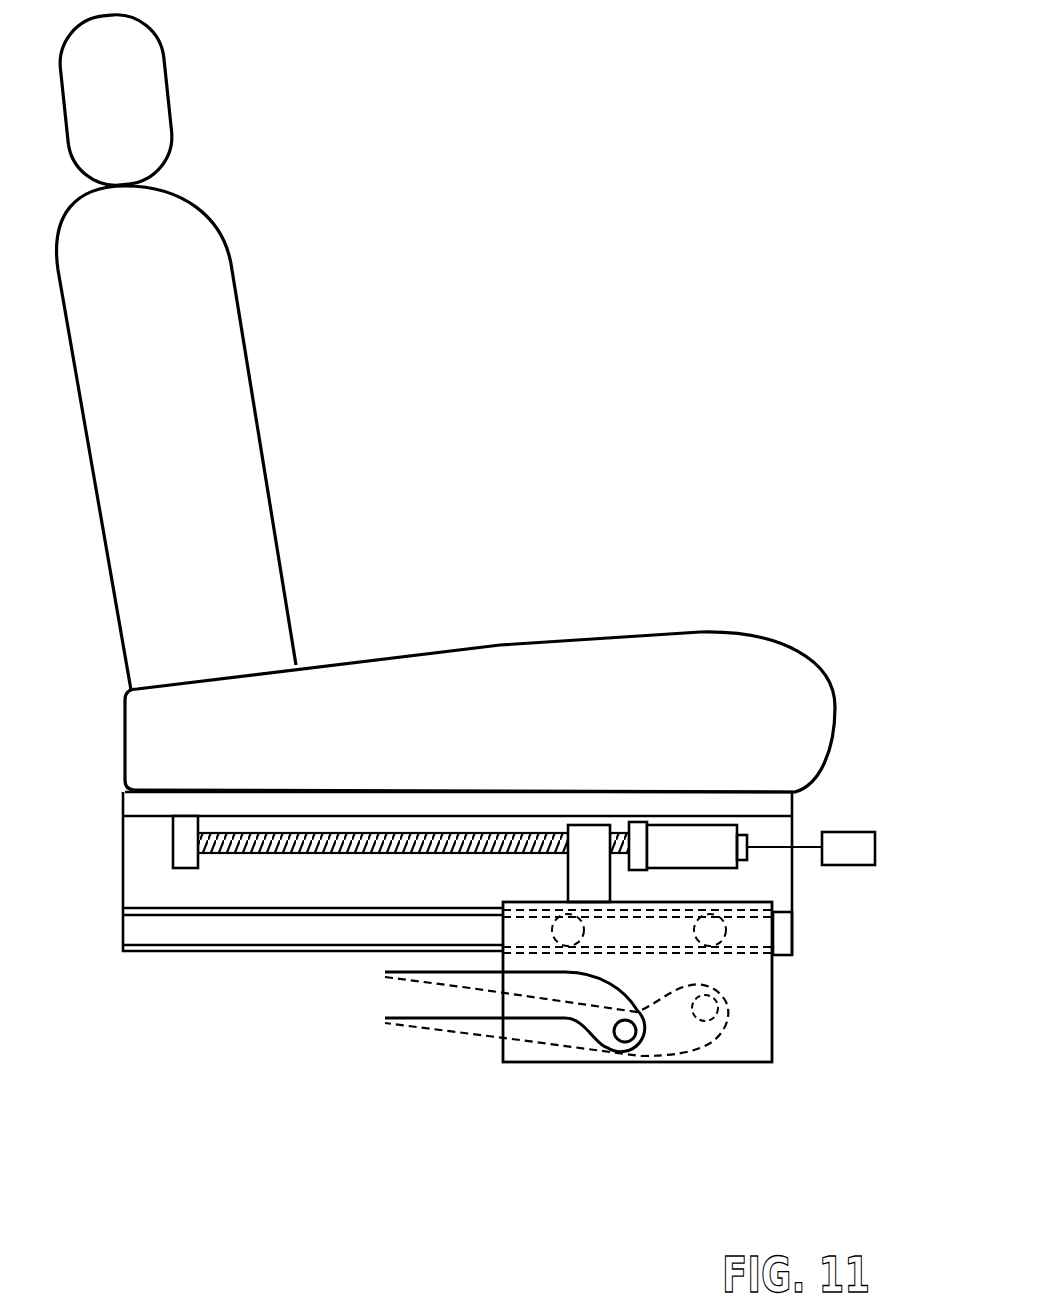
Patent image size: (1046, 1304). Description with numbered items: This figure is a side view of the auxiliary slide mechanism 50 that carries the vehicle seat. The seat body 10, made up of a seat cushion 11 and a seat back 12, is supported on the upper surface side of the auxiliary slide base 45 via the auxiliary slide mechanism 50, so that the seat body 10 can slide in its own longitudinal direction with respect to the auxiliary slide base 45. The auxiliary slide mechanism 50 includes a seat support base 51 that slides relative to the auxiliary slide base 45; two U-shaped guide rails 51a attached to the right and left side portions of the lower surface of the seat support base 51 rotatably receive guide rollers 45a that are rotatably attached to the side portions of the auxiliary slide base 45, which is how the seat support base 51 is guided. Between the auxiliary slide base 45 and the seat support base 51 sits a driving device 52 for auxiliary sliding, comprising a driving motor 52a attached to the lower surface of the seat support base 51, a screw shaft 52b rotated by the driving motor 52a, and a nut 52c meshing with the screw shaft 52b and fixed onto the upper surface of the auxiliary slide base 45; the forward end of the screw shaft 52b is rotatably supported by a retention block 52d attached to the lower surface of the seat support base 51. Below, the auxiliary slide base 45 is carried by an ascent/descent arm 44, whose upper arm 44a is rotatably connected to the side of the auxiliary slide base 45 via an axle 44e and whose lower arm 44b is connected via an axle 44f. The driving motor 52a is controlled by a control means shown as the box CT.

The seat body 10 is at (613, 605).
The seat cushion 11 is at (731, 632).
The seat back 12 is at (198, 322).
The ascent/descent arm 44 is at (405, 1038).
The upper arm 44a is at (487, 1027).
The lower arm 44b is at (378, 1000).
The axle 44e is at (730, 1045).
The axle 44f is at (630, 1042).
The auxiliary slide base 45 is at (728, 1050).
The guide roller 45a is at (568, 947).
The auxiliary slide mechanism 50 is at (824, 884).
The seat support base 51 is at (792, 803).
The guide rail 51a is at (792, 935).
The driving device 52 is at (437, 826).
The driving motor 52a is at (712, 833).
The screw shaft 52b is at (480, 830).
The nut 52c is at (596, 845).
The retention block 52d is at (182, 852).